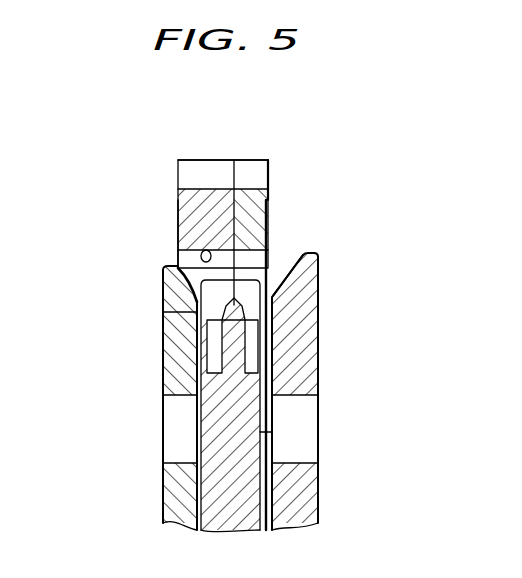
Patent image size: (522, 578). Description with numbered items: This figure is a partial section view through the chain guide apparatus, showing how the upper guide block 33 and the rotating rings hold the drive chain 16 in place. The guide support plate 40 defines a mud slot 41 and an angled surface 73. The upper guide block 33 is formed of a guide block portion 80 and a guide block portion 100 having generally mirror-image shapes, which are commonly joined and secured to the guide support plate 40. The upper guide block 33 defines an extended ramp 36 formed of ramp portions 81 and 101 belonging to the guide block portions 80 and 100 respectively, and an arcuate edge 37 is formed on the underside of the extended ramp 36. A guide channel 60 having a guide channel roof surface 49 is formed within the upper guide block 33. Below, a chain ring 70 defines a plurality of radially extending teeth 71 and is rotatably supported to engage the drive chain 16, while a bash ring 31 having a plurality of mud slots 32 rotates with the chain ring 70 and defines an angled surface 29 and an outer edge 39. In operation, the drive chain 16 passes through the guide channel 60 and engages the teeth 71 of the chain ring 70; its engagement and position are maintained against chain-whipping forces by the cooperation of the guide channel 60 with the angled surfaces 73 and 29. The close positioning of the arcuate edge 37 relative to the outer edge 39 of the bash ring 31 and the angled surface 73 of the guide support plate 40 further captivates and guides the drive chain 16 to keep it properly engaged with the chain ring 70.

The guide block portion 100 is at (185, 160).
The ramp portion 101 is at (178, 212).
The extended ramp 36 is at (210, 172).
The arcuate edge 37 is at (207, 250).
The guide block portion 80 is at (259, 160).
The upper guide block 33 is at (268, 172).
The ramp portion 81 is at (269, 205).
The angled surface 29 is at (178, 221).
The outer edge 39 is at (173, 263).
The guide channel roof surface 49 is at (163, 312).
The radially extending teeth 71 is at (197, 318).
The mud slots 32 is at (165, 400).
The bash ring 31 is at (163, 478).
The guide channel 60 is at (240, 298).
The drive chain 16 is at (207, 345).
The chain ring 70 is at (272, 432).
The guide support plate 40 is at (318, 328).
The angled surface 73 is at (283, 272).
The mud slot 41 is at (295, 396).